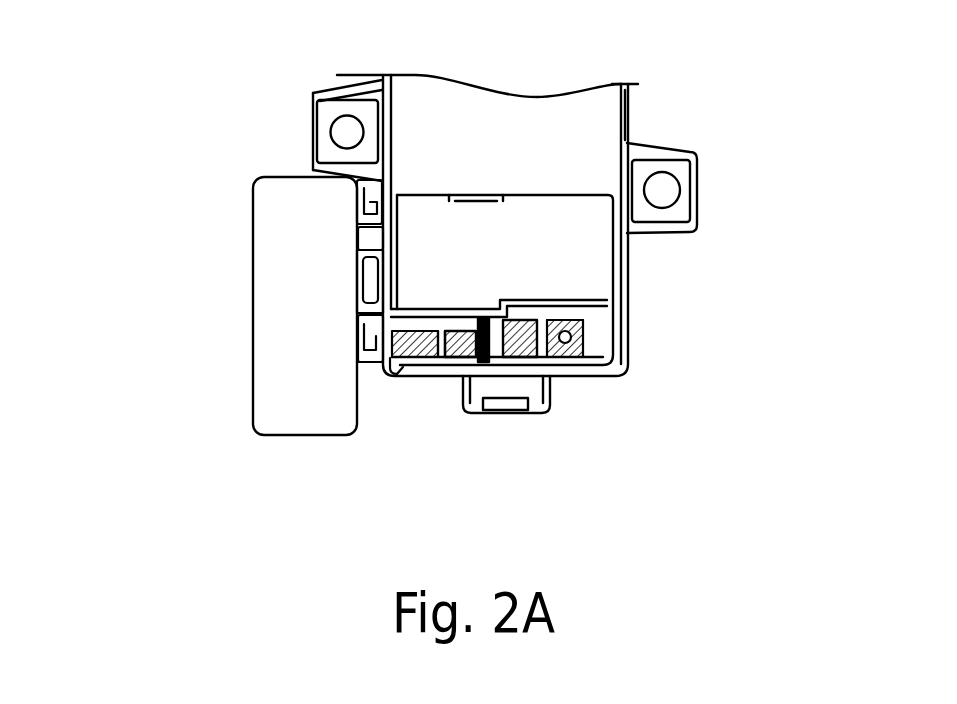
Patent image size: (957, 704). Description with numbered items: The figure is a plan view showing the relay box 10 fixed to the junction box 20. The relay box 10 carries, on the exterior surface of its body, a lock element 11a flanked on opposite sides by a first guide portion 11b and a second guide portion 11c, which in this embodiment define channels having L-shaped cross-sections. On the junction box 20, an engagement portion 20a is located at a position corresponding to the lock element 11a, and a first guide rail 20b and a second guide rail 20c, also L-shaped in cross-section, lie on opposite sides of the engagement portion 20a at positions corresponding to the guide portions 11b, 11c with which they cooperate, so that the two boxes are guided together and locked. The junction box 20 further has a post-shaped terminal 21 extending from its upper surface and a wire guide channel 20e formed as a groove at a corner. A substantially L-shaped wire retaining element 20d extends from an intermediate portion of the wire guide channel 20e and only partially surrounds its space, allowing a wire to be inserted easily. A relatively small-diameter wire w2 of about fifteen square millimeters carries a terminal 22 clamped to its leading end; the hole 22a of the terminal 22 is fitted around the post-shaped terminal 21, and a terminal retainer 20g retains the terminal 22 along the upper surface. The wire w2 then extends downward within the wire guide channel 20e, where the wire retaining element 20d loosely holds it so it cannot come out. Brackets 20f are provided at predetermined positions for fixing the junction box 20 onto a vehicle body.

The relay box 10 is at (245, 279).
The lock element 11a is at (355, 273).
The first guide portion 11b is at (357, 370).
The second guide portion 11c is at (357, 193).
The junction box 20 is at (641, 124).
The engagement portion 20a is at (357, 232).
The first guide rail 20b is at (357, 329).
The second guide rail 20c is at (366, 202).
The wire retaining element 20d is at (387, 372).
The wire guide channel 20e is at (409, 362).
The brackets 20f is at (700, 188).
The terminal retainer 20g is at (527, 358).
The post-shaped terminal 21 is at (572, 335).
The terminal 22 is at (567, 358).
The hole 22a is at (587, 322).
The wire w2 is at (428, 360).